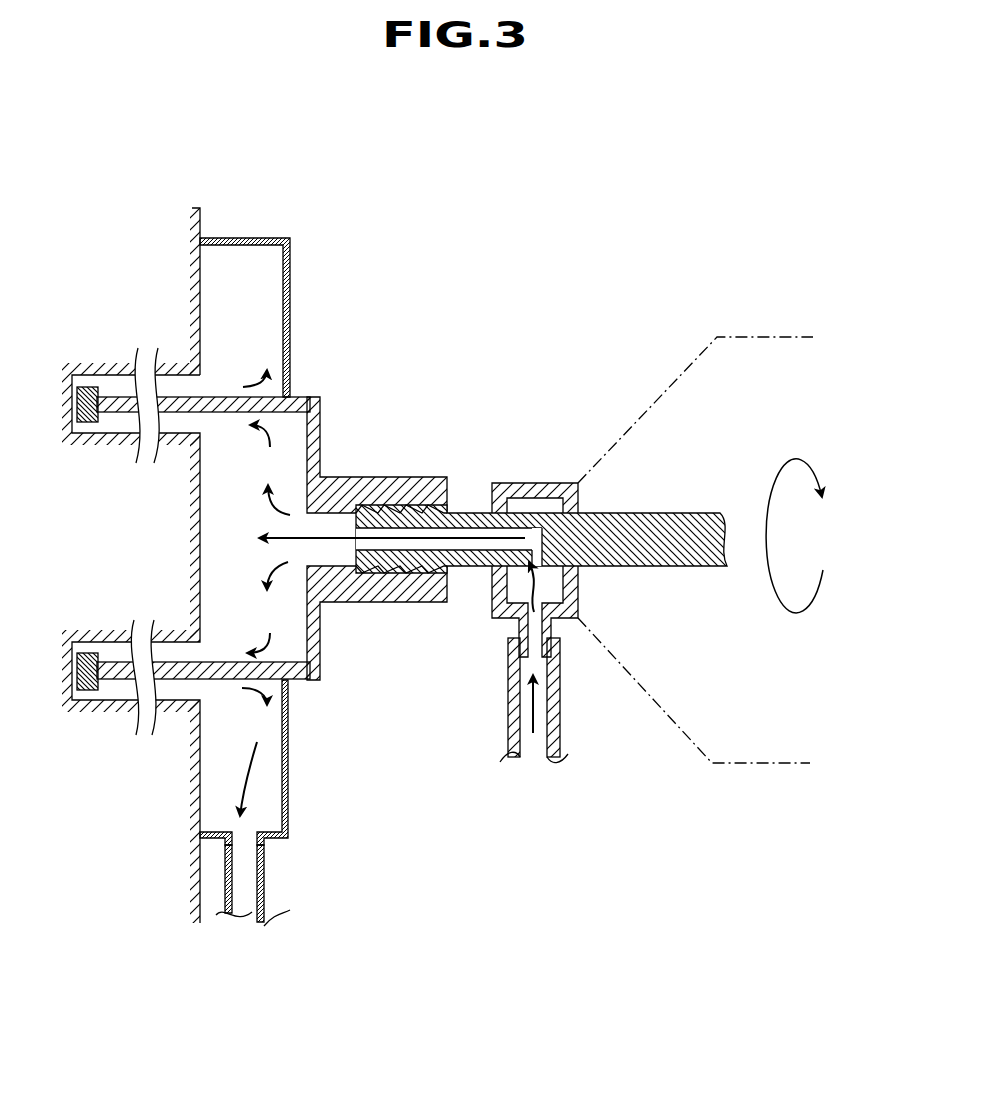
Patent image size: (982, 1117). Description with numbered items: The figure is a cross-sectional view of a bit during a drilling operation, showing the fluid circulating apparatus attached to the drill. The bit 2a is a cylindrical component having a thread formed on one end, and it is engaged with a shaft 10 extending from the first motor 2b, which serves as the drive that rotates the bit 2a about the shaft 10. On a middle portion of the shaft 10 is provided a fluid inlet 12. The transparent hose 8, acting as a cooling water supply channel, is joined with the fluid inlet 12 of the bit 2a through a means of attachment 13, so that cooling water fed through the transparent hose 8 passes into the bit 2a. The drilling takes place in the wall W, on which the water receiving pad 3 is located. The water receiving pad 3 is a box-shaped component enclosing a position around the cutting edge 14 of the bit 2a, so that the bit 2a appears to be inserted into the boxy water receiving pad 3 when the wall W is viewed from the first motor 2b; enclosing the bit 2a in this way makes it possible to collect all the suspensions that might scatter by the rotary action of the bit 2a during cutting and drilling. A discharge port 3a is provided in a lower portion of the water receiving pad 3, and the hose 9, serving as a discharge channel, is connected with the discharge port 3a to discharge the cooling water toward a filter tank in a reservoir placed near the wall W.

The wall W is at (198, 218).
The cutting edge 14 is at (88, 423).
The bit 2a is at (390, 481).
The means of attachment 13 is at (535, 483).
The shaft 10 is at (636, 535).
The fluid inlet 12 is at (524, 560).
The transparent hose 8 is at (508, 733).
The water receiving pad 3 is at (270, 733).
The discharge port 3a is at (245, 833).
The hose 9 is at (255, 897).
The first motor 2b is at (746, 723).